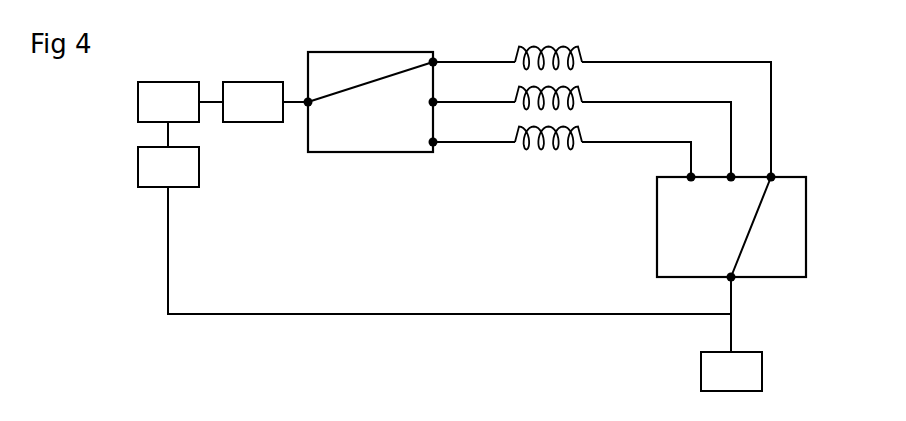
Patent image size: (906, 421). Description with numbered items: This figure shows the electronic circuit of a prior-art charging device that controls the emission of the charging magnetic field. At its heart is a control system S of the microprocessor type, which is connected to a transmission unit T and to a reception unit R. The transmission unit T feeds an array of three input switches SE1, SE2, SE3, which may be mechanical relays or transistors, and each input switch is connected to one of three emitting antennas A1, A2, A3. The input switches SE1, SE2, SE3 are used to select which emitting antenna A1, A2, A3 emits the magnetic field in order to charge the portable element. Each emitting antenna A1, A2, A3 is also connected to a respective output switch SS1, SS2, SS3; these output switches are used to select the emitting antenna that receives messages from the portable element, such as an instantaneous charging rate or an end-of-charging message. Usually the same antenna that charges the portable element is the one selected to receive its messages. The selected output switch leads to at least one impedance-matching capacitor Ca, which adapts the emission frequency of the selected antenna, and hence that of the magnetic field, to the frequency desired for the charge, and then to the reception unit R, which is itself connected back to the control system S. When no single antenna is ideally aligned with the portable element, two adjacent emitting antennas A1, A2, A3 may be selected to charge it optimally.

The control system S is at (168, 102).
The transmission unit T is at (253, 102).
The reception unit R is at (168, 167).
The input switch SE1 is at (448, 53).
The input switch SE2 is at (448, 93).
The input switch SE3 is at (448, 133).
The emitting antenna A1 is at (562, 52).
The emitting antenna A2 is at (562, 92).
The emitting antenna A3 is at (562, 132).
The output switch SS1 is at (782, 192).
The output switch SS2 is at (728, 192).
The output switch SS3 is at (681, 192).
The impedance-matching capacitor Ca is at (731, 371).